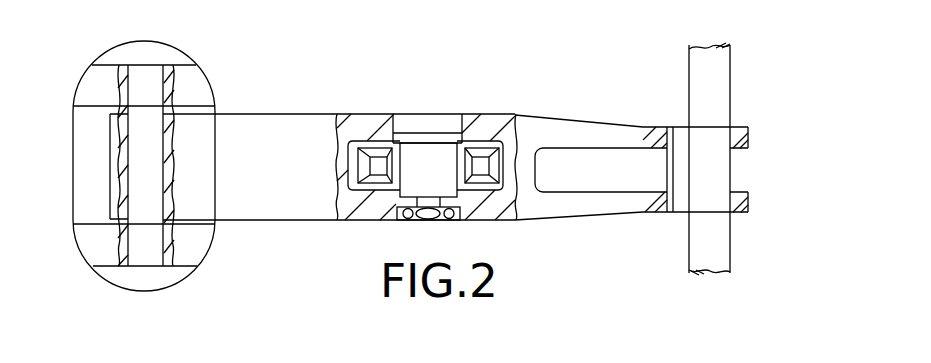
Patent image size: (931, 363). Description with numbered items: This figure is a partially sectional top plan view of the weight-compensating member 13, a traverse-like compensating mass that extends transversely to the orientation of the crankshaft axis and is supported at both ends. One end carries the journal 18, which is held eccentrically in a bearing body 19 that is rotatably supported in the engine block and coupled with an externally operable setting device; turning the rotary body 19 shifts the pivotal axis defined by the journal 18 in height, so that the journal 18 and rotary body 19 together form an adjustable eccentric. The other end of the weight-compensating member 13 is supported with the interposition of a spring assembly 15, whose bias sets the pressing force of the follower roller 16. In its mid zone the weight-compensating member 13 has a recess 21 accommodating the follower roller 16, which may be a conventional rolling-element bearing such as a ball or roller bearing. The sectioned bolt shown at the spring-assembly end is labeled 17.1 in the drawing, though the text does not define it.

The weight-compensating member 13 is at (538, 127).
The spring assembly 15 is at (183, 166).
The follower roller 16 is at (500, 147).
The bolt 17.1 is at (146, 91).
The journal 18 is at (718, 138).
The bearing body 19 is at (715, 82).
The recess 21 is at (515, 152).